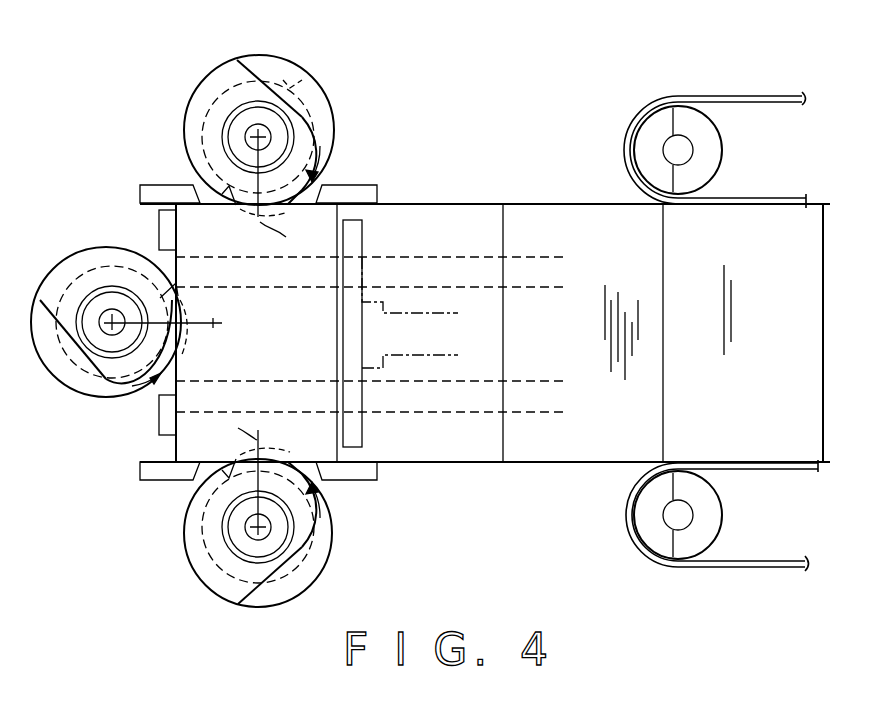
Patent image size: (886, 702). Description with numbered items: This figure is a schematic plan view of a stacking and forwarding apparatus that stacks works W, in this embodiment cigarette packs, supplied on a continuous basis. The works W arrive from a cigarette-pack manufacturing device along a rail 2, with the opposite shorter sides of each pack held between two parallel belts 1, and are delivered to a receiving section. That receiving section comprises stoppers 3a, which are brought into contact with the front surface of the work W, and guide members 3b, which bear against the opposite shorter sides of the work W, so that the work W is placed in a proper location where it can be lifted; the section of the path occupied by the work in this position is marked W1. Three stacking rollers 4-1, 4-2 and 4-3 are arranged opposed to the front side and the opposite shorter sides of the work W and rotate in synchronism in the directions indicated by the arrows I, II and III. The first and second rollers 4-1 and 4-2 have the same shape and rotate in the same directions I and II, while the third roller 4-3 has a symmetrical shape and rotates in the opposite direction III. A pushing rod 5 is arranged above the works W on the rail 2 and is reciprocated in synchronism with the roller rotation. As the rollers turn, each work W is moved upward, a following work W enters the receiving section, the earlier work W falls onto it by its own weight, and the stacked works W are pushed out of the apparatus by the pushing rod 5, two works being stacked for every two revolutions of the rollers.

The parallel belts 1 is at (772, 204).
The rail 2 is at (460, 252).
The stopper 3a is at (158, 226).
The guide member 3b is at (160, 188).
The first stacking roller 4-1 is at (184, 578).
The second stacking roller 4-2 is at (45, 370).
The third stacking roller 4-3 is at (286, 57).
The pushing rod 5 is at (343, 338).
The work W is at (577, 204).
The workpiece section W1 is at (407, 484).
The rotation direction of first roller I is at (333, 540).
The rotation direction of second roller II is at (135, 396).
The rotation direction of third roller III is at (322, 150).